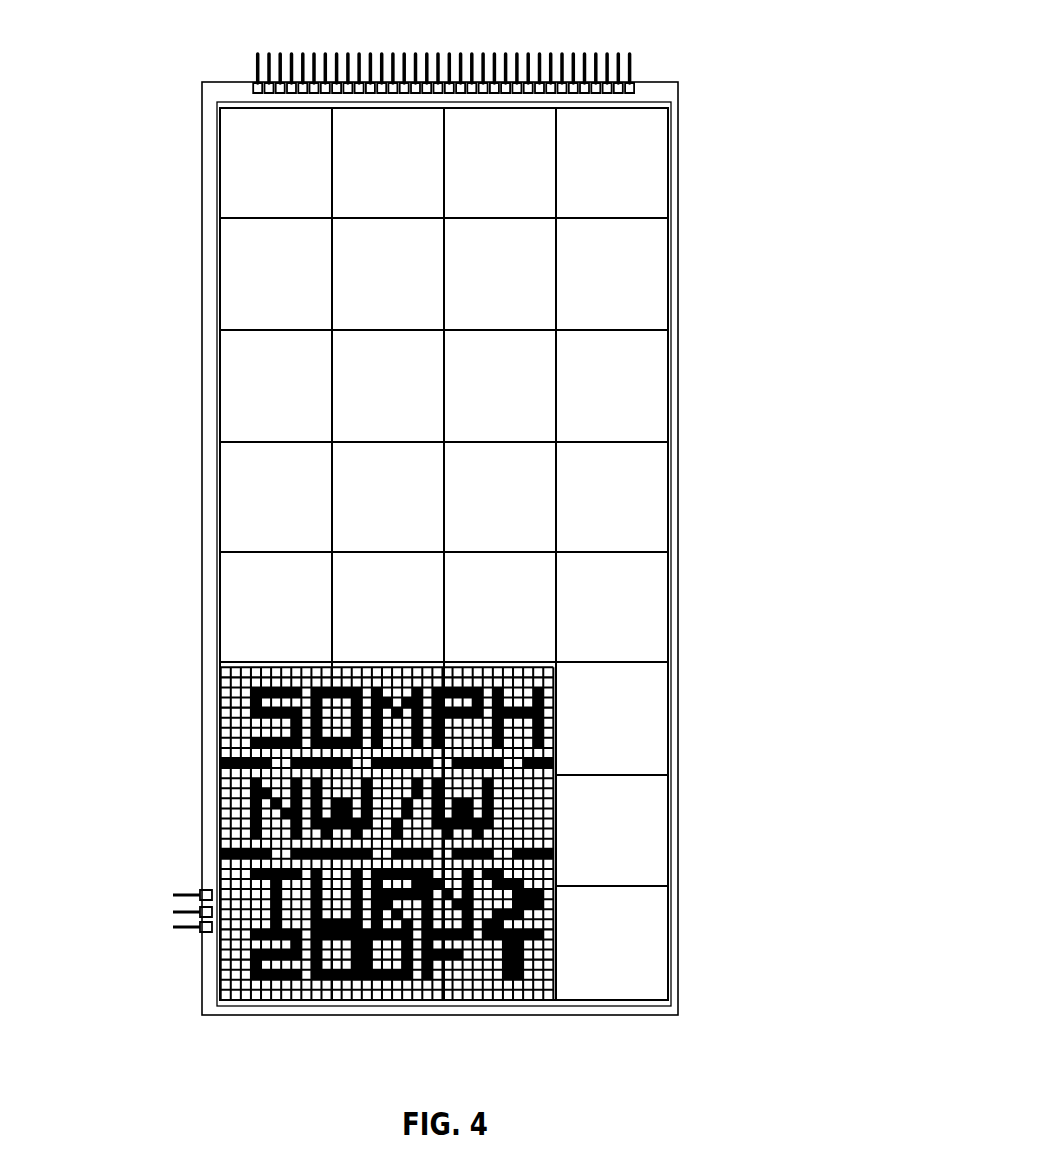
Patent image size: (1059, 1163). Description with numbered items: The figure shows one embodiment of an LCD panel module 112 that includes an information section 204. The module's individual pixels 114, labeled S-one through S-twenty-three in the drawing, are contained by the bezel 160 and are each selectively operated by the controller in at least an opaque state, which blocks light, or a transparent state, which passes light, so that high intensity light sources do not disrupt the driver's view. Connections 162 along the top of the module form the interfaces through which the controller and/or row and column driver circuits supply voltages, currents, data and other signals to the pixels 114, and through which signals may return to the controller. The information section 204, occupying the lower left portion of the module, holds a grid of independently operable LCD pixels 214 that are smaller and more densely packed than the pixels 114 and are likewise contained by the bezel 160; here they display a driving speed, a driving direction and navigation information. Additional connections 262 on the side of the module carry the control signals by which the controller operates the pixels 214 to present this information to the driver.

The LCD panel module 112 is at (126, 67).
The pixels 114 is at (244, 347).
The bezel 160 is at (673, 385).
The connections 162 is at (652, 58).
The information section 204 is at (202, 676).
The LCD pixels 214 is at (225, 822).
The additional connections 262 is at (178, 946).